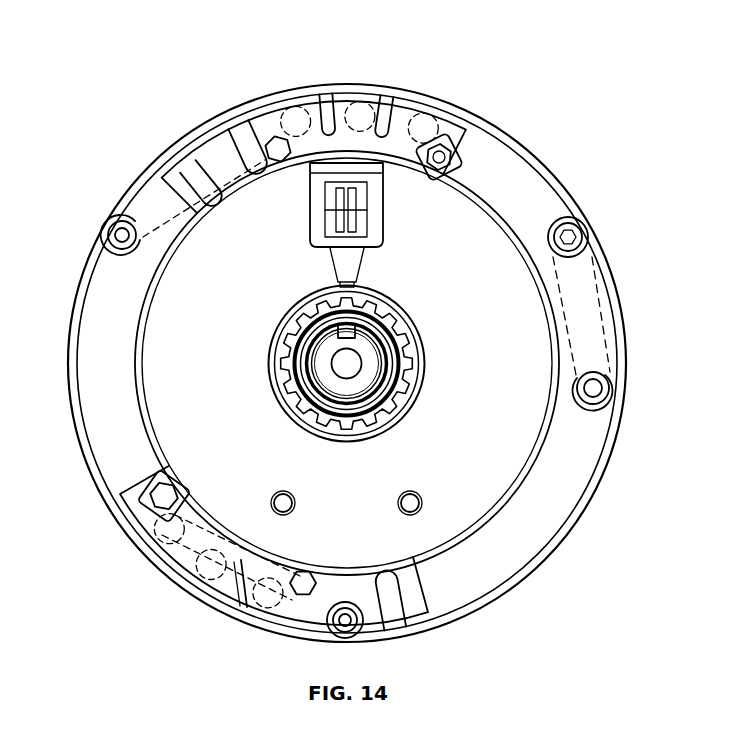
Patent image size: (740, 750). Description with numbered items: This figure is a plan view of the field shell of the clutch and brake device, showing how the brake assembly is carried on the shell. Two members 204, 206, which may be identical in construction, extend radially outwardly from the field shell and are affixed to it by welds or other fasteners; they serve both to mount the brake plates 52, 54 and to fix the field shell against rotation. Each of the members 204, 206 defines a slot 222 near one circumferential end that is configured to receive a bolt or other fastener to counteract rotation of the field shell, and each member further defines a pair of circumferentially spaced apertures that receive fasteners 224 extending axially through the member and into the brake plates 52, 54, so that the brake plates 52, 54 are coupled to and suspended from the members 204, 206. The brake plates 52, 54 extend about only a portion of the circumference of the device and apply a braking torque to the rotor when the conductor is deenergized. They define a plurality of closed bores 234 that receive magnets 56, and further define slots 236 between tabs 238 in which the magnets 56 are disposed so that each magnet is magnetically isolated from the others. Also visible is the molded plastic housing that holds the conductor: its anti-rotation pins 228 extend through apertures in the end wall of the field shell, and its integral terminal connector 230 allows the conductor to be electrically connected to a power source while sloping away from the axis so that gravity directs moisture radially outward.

The brake plate 52 is at (383, 97).
The brake plate 54 is at (248, 607).
The magnet 56 is at (453, 122).
The member 204 is at (230, 180).
The member 206 is at (188, 500).
The slot 222 is at (187, 184).
The fastener 224 is at (437, 160).
The anti-rotation pin 228 is at (420, 503).
The terminal connector 230 is at (320, 203).
The bore 234 is at (150, 512).
The slot 236 is at (336, 97).
The tab 238 is at (312, 97).